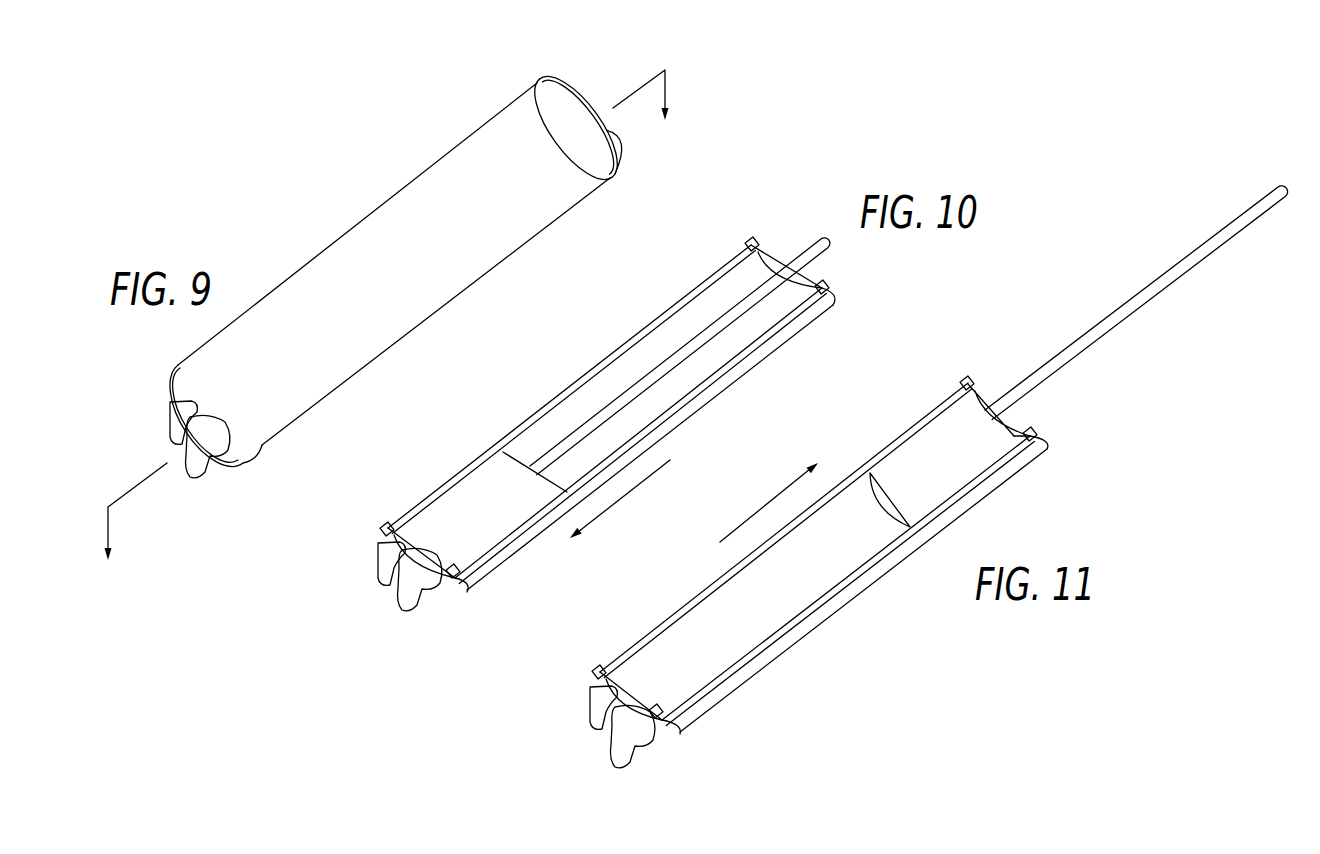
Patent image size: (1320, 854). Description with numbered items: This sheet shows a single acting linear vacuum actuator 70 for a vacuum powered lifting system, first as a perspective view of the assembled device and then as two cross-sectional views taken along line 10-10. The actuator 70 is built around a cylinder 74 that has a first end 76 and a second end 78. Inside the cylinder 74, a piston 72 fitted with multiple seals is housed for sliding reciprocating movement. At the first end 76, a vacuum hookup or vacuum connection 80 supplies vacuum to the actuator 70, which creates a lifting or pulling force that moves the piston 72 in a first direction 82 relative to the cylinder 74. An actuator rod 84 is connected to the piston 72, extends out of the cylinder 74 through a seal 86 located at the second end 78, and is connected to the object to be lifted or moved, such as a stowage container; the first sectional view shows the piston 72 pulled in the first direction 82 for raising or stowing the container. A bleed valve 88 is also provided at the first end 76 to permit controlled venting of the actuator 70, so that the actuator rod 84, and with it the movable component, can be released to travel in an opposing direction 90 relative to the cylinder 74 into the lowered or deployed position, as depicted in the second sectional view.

In FIG. 9, the line 10- 10 is at (383, 335).
In FIG. 9, the single acting linear vacuum actuator 70 is at (371, 284).
In FIG. 10, the piston 72 is at (480, 495).
In FIG. 11, the piston 72 is at (940, 481).
In FIG. 9, the cylinder 74 is at (397, 293).
In FIG. 10, the cylinder 74 is at (550, 408).
In FIG. 11, the cylinder 74 is at (830, 610).
In FIG. 9, the first end 76 is at (180, 386).
In FIG. 10, the first end 76 is at (385, 535).
In FIG. 11, the first end 76 is at (598, 682).
In FIG. 9, the second end 78 is at (545, 80).
In FIG. 10, the second end 78 is at (752, 243).
In FIG. 11, the second end 78 is at (963, 382).
In FIG. 9, the vacuum connection 80 is at (200, 462).
In FIG. 10, the vacuum connection 80 is at (420, 600).
In FIG. 11, the vacuum connection 80 is at (617, 745).
In FIG. 10, the first direction 82 is at (620, 499).
In FIG. 10, the actuator rod 84 is at (820, 233).
In FIG. 11, the actuator rod 84 is at (1165, 290).
In FIG. 10, the seal 86 is at (787, 260).
In FIG. 11, the seal 86 is at (997, 405).
In FIG. 9, the bleed valve 88 is at (170, 424).
In FIG. 10, the bleed valve 88 is at (378, 570).
In FIG. 11, the bleed valve 88 is at (590, 716).
In FIG. 11, the opposing direction 90 is at (773, 500).